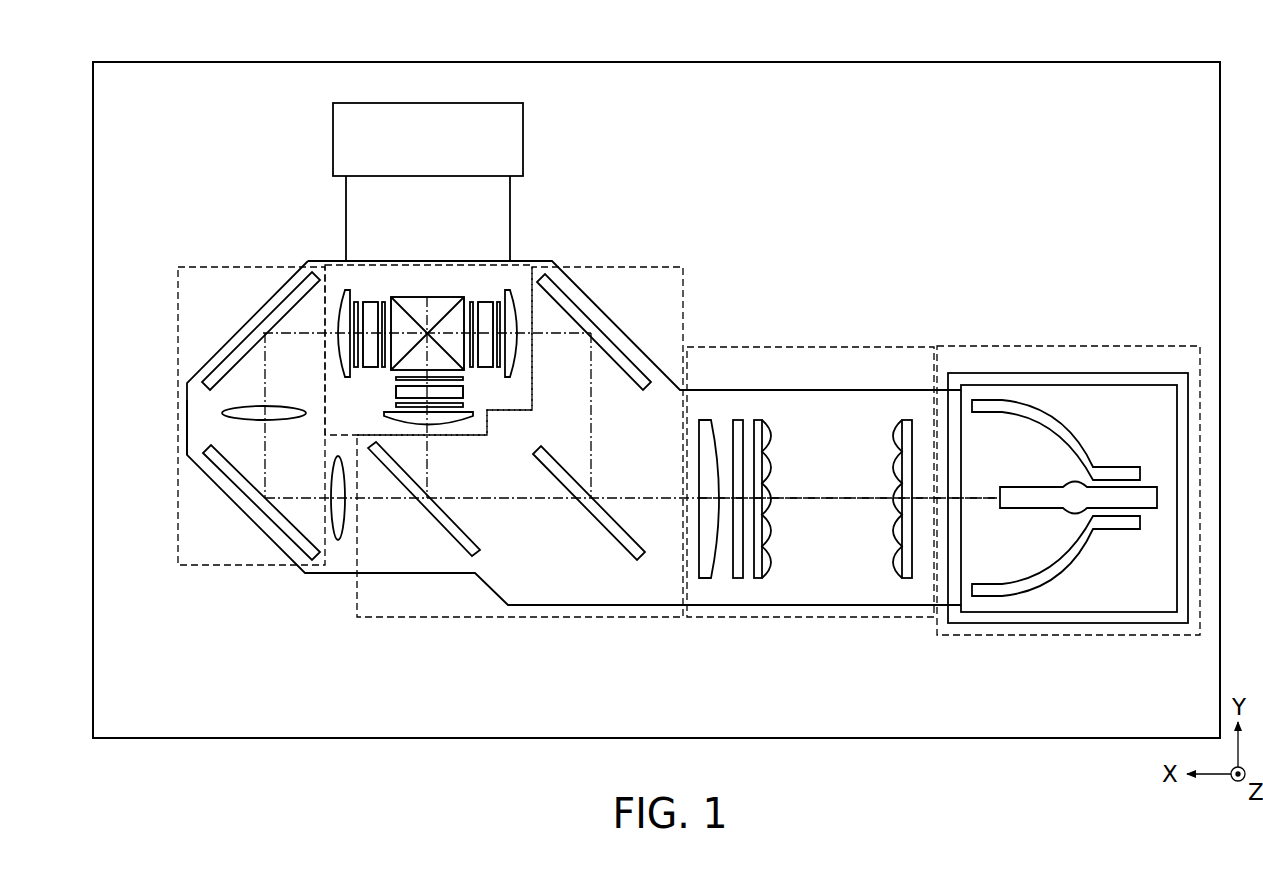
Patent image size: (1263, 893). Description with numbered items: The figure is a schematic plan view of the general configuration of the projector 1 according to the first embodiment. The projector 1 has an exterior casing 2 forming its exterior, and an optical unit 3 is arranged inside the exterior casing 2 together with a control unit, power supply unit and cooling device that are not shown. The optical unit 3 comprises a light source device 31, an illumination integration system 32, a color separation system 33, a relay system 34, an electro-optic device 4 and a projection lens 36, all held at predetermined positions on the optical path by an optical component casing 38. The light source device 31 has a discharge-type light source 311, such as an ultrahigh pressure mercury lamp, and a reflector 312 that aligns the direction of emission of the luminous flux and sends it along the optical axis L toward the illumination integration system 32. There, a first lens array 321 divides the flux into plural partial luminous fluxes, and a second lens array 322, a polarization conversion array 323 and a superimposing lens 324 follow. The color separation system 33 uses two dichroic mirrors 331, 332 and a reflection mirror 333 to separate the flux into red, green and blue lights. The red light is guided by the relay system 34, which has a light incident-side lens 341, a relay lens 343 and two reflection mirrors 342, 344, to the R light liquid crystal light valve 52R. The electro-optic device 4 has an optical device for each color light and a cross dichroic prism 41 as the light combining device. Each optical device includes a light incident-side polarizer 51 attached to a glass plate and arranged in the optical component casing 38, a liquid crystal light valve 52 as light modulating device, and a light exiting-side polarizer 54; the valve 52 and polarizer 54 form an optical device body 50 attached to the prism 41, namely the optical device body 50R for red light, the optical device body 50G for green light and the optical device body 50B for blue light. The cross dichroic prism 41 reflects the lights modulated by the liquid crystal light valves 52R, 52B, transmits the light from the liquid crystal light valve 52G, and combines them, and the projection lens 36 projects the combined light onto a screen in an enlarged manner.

The projector 1 is at (726, 48).
The exterior casing 2 is at (92, 230).
The optical unit 3 is at (667, 145).
The electro-optic device 4 is at (425, 287).
The light source device 31 is at (980, 637).
The illumination integration system 32 is at (735, 617).
The color separation system 33 is at (547, 618).
The relay system 34 is at (178, 425).
The projection lens 36 is at (523, 133).
The optical component casing 38 is at (440, 573).
The cross dichroic prism 41 is at (408, 298).
The optical device body 50 is at (428, 350).
The optical device body for R light 50R is at (360, 380).
The optical device body for G light 50G is at (475, 390).
The optical device body for B light 50B is at (478, 288).
The light incident-side polarizer 51 is at (343, 298).
The liquid crystal light valve 52 is at (429, 392).
The R light liquid crystal light valve 52R is at (370, 300).
The G light liquid crystal light valve 52G is at (442, 398).
The B light liquid crystal light valve 52B is at (485, 300).
The light exiting-side polarizer 54 is at (471, 300).
The light source 311 is at (1038, 502).
The reflector 312 is at (1078, 546).
The first lens array 321 is at (908, 427).
The second lens array 322 is at (758, 420).
The polarization conversion array 323 is at (738, 427).
The superimposing lens 324 is at (708, 427).
The dichroic mirror 331 is at (620, 537).
The dichroic mirror 332 is at (458, 537).
The reflection mirror 333 is at (615, 350).
The light incident-side lens 341 is at (335, 527).
The reflection mirror 342 is at (232, 470).
The relay lens 343 is at (278, 418).
The reflection mirror 344 is at (248, 350).
The optical axis L is at (827, 498).